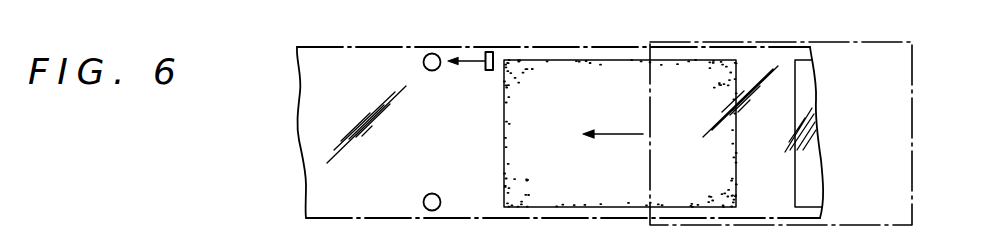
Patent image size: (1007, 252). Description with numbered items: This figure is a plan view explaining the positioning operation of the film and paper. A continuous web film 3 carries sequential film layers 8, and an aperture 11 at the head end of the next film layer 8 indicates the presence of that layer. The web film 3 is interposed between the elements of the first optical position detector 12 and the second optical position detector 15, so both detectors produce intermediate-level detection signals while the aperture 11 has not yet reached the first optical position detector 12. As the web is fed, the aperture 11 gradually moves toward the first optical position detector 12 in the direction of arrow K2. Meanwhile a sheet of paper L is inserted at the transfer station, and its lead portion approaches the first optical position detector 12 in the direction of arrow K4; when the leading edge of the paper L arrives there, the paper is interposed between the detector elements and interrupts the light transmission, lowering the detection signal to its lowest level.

The continuous web film 3 is at (822, 150).
The film layer 8 is at (503, 152).
The aperture 11 is at (489, 52).
The first optical position detector 12 is at (429, 53).
The second optical position detector 15 is at (423, 196).
The sheet of paper L is at (912, 128).
The arrow indicating film movement direction K2 is at (468, 61).
The arrow indicating paper movement direction K4 is at (618, 134).